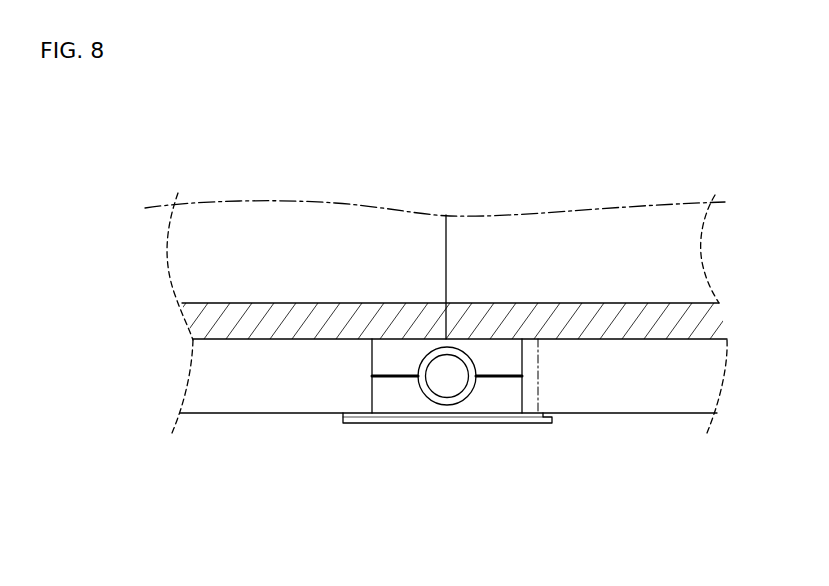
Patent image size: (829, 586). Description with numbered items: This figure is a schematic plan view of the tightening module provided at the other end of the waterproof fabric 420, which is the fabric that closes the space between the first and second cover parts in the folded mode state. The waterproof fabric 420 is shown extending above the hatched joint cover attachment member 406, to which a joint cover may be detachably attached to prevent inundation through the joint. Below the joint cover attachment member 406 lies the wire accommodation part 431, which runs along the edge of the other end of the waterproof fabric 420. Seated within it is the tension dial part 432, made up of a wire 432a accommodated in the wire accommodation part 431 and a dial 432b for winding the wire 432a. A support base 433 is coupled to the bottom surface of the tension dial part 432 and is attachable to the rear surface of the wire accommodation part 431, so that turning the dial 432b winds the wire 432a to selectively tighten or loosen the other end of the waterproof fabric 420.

The waterproof fabric 420 is at (332, 222).
The joint cover attachment member 406 is at (208, 317).
The wire accommodation part 431 is at (243, 403).
The tension dial part 432 is at (442, 452).
The wire 432a is at (493, 377).
The dial 432b is at (421, 432).
The support base 433 is at (543, 418).